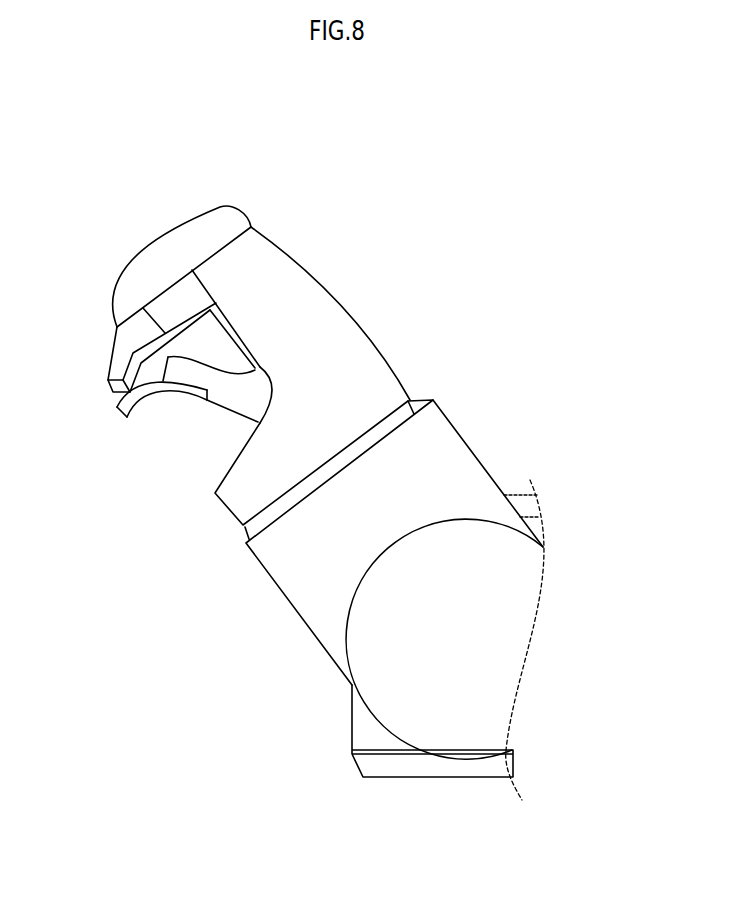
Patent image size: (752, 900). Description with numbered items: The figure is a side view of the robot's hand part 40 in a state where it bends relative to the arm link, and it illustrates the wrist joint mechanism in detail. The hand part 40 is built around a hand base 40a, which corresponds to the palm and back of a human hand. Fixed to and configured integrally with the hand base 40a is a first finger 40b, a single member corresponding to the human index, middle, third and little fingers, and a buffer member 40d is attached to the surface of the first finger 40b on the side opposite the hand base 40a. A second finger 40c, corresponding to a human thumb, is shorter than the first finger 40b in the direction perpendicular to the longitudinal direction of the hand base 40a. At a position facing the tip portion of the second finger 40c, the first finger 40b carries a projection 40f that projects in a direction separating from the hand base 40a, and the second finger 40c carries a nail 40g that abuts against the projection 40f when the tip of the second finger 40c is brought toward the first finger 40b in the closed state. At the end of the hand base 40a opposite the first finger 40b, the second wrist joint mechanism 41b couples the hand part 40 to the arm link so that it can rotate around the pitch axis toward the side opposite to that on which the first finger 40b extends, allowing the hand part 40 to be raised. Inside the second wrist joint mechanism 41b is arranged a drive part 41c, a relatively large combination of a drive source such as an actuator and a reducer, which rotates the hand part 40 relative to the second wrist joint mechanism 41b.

The hand part 40 is at (407, 190).
The hand base 40a is at (340, 323).
The first finger 40b is at (163, 298).
The second finger 40c is at (227, 398).
The buffer member 40d is at (173, 260).
The projection 40f is at (112, 350).
The nail 40g is at (123, 403).
The second wrist joint mechanism 41b is at (475, 690).
The drive part 41c is at (448, 532).